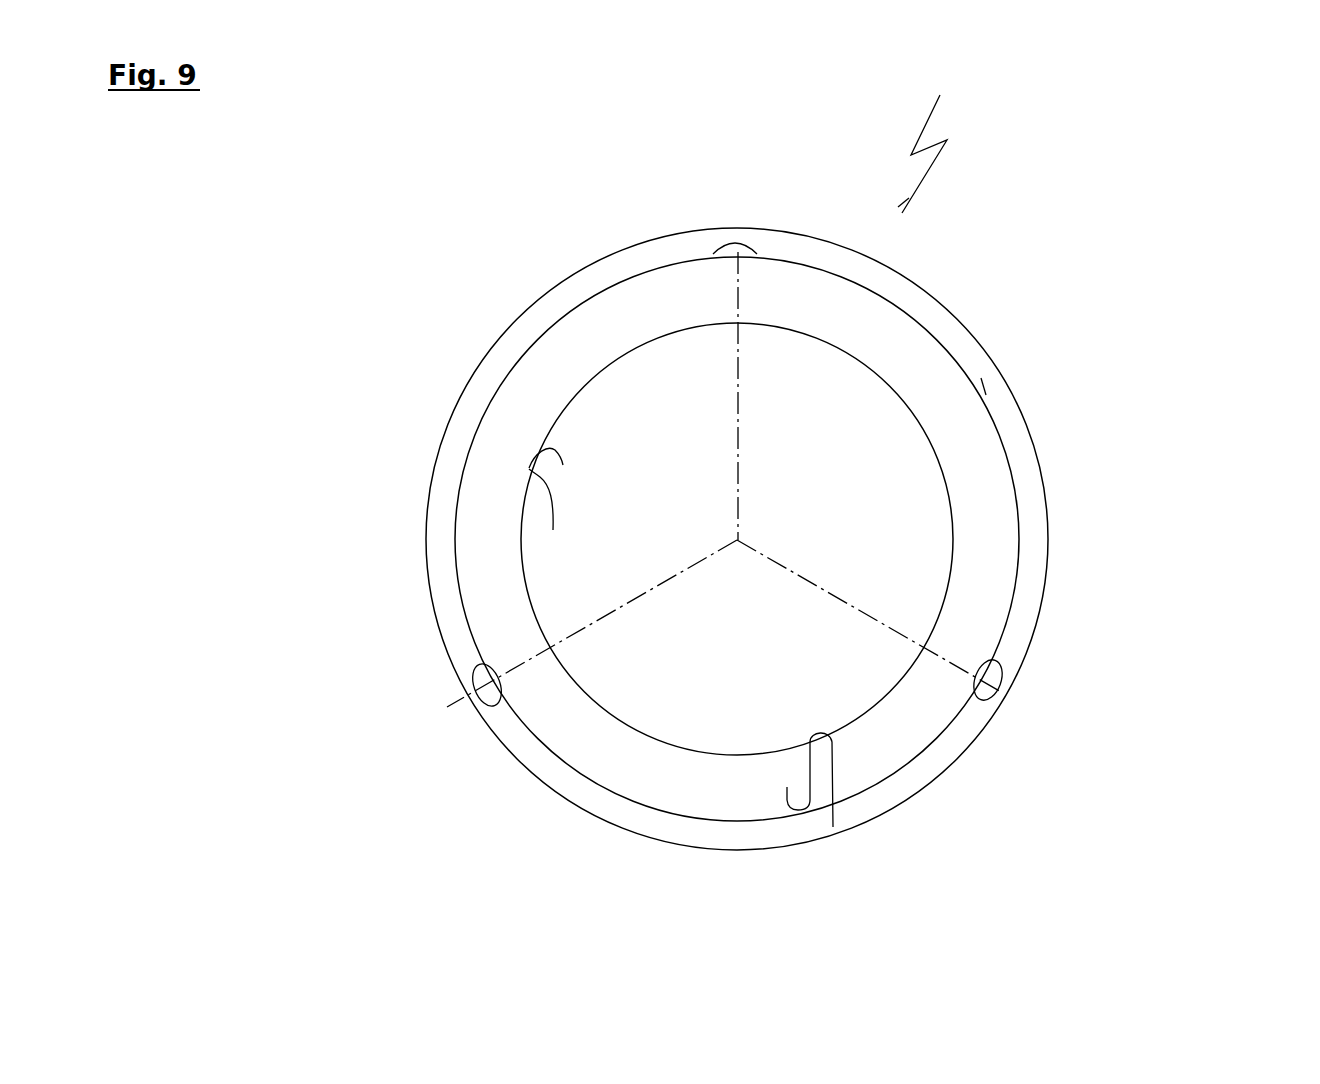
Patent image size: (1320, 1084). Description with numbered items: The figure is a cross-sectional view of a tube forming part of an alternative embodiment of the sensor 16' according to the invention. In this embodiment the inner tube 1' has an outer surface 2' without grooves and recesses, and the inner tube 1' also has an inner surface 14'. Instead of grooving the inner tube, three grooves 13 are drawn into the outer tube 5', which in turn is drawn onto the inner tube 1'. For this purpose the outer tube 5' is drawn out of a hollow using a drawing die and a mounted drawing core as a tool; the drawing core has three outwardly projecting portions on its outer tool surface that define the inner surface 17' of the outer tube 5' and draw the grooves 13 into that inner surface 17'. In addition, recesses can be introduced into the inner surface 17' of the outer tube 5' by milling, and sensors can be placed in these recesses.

The inner tube 1' is at (809, 480).
The outer surface of the inner tube 2' is at (842, 539).
The outer tube 5' is at (863, 539).
The groove in the inner surface of the outer tube 13 is at (740, 256).
The inner surface of the inner tube 14' is at (521, 659).
The sensor 16' is at (935, 138).
The inner surface of the outer tube 17' is at (896, 837).